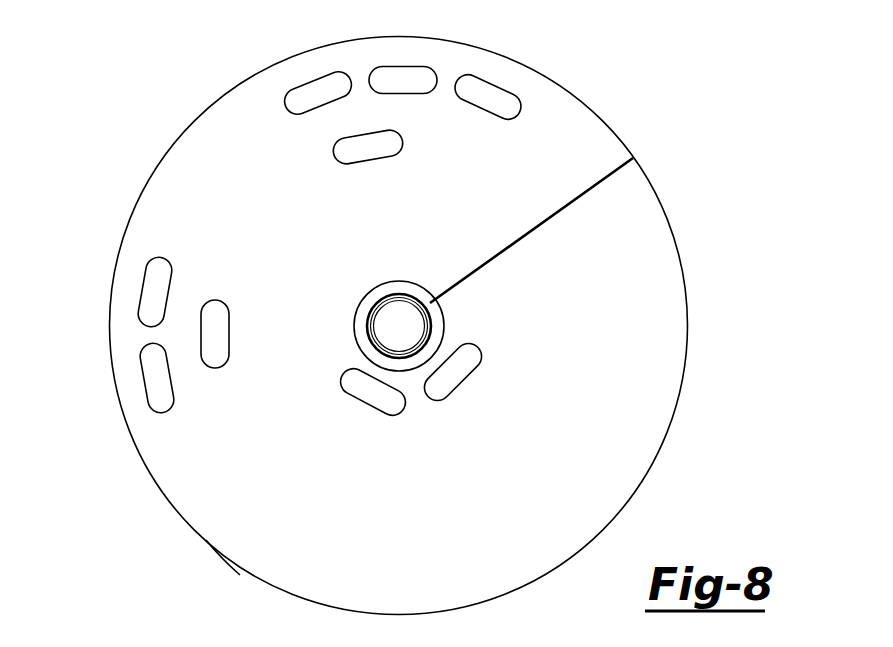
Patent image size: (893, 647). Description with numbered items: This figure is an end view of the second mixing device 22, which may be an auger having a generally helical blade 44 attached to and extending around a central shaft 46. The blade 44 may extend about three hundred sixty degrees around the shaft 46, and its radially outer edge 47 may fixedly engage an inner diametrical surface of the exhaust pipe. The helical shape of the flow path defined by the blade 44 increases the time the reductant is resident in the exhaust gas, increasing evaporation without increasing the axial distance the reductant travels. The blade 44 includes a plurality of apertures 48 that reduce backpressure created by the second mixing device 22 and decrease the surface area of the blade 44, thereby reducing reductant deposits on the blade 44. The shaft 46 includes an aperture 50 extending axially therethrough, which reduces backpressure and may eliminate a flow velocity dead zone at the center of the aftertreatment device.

The second mixing device 22 is at (103, 100).
The helical blade 44 is at (635, 398).
The central shaft 46 is at (375, 303).
The radially outer edge 47 is at (222, 558).
The apertures 48 is at (498, 93).
The aperture 50 is at (405, 328).